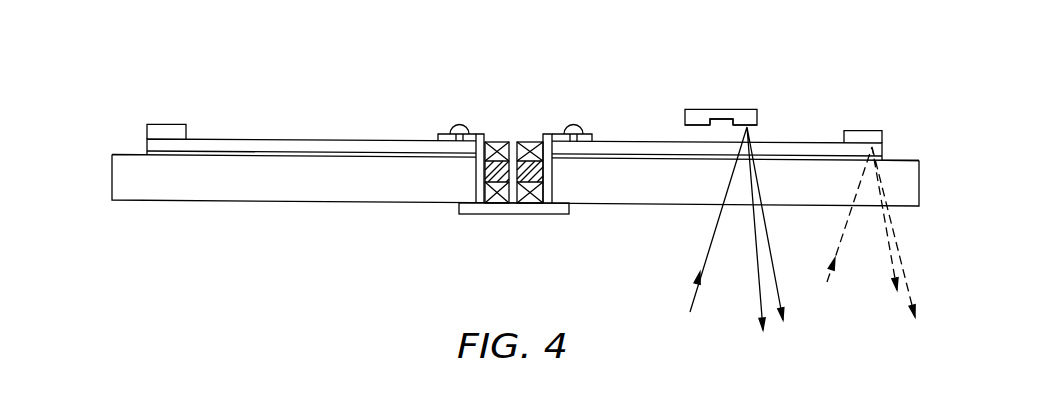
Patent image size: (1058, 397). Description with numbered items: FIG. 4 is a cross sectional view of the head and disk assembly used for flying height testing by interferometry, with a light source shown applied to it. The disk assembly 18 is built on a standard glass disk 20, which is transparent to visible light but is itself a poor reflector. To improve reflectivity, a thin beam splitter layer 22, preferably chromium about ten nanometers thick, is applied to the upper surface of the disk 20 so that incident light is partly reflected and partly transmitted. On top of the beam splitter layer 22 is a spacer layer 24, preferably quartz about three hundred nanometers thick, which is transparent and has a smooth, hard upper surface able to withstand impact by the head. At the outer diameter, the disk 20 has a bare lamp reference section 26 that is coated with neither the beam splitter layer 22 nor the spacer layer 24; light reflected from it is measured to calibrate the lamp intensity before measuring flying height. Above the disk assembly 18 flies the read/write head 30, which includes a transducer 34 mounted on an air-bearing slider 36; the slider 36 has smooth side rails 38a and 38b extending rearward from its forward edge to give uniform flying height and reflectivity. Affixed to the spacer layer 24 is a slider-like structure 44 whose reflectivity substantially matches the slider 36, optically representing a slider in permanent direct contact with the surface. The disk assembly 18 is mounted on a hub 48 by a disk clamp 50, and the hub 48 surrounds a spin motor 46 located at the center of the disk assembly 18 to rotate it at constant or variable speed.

The disk assembly 18 is at (142, 139).
The glass disk 20 is at (233, 188).
The beam splitter layer 22 is at (230, 143).
The spacer layer 24 is at (292, 145).
The lamp reference section 26 is at (893, 160).
The read/write head 30 is at (728, 93).
The transducer 34 is at (685, 112).
The air-bearing slider 36 is at (724, 109).
The side rail 38a is at (697, 126).
The side rail 38b is at (757, 126).
The slider-like structure 44 is at (850, 131).
The spin motor 46 is at (500, 141).
The hub 48 is at (508, 210).
The disk clamp 50 is at (442, 132).